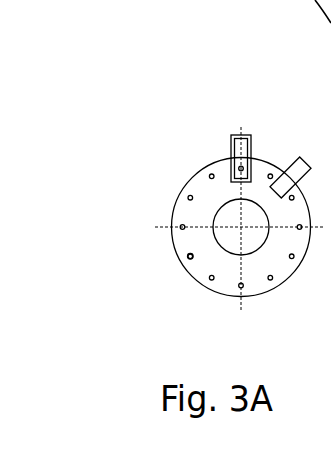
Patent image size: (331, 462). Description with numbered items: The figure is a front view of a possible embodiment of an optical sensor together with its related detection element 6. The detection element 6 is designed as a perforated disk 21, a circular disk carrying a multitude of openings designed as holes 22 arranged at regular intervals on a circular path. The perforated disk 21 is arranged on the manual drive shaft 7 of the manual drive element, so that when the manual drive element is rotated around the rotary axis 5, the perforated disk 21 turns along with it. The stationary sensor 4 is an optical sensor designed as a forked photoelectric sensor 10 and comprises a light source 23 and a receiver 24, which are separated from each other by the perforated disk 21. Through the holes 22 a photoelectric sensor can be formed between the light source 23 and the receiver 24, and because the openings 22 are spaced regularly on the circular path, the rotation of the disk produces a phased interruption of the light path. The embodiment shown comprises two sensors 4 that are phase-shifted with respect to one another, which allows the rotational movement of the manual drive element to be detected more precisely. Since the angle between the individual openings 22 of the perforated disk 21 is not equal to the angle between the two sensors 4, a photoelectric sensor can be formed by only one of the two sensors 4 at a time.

The sensor 4 is at (181, 122).
The forked photoelectric sensor 10 is at (181, 122).
The light source 23 is at (181, 122).
The receiver 24 is at (290, 128).
The rotary axis 5 is at (148, 212).
The manual drive shaft 7 is at (238, 227).
The holes 22 is at (188, 256).
The detection element 6 is at (252, 256).
The perforated disk 21 is at (257, 283).